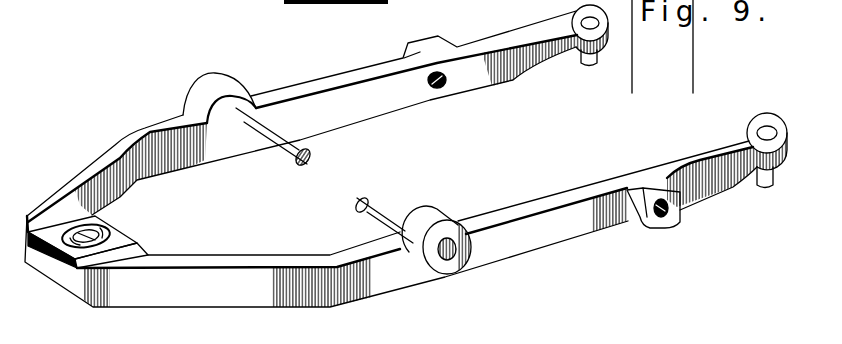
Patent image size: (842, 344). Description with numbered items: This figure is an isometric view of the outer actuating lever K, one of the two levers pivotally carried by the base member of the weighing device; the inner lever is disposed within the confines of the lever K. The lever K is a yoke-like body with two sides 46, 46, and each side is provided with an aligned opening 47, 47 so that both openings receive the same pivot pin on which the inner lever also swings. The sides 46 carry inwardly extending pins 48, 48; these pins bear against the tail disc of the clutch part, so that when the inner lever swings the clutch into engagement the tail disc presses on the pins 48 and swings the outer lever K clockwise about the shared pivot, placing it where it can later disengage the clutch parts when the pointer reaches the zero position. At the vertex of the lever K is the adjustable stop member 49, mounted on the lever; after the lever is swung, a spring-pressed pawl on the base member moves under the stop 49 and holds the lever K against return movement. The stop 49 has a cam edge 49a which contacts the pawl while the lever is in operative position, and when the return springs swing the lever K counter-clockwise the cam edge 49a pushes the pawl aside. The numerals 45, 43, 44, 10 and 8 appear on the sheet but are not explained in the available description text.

The outer actuating lever K is at (406, 172).
The upper arm of yoke 45 is at (483, 44).
The sides of lever K 46 is at (553, 200).
The aligned openings 47 is at (440, 87).
The inwardly extending pins 48 is at (312, 156).
The adjustable stop member 49 is at (125, 226).
The cam edge 49a is at (140, 243).
The roller 43 is at (437, 275).
The element 44 is at (373, 336).
The element 10 is at (486, 336).
The element 8 is at (550, 336).